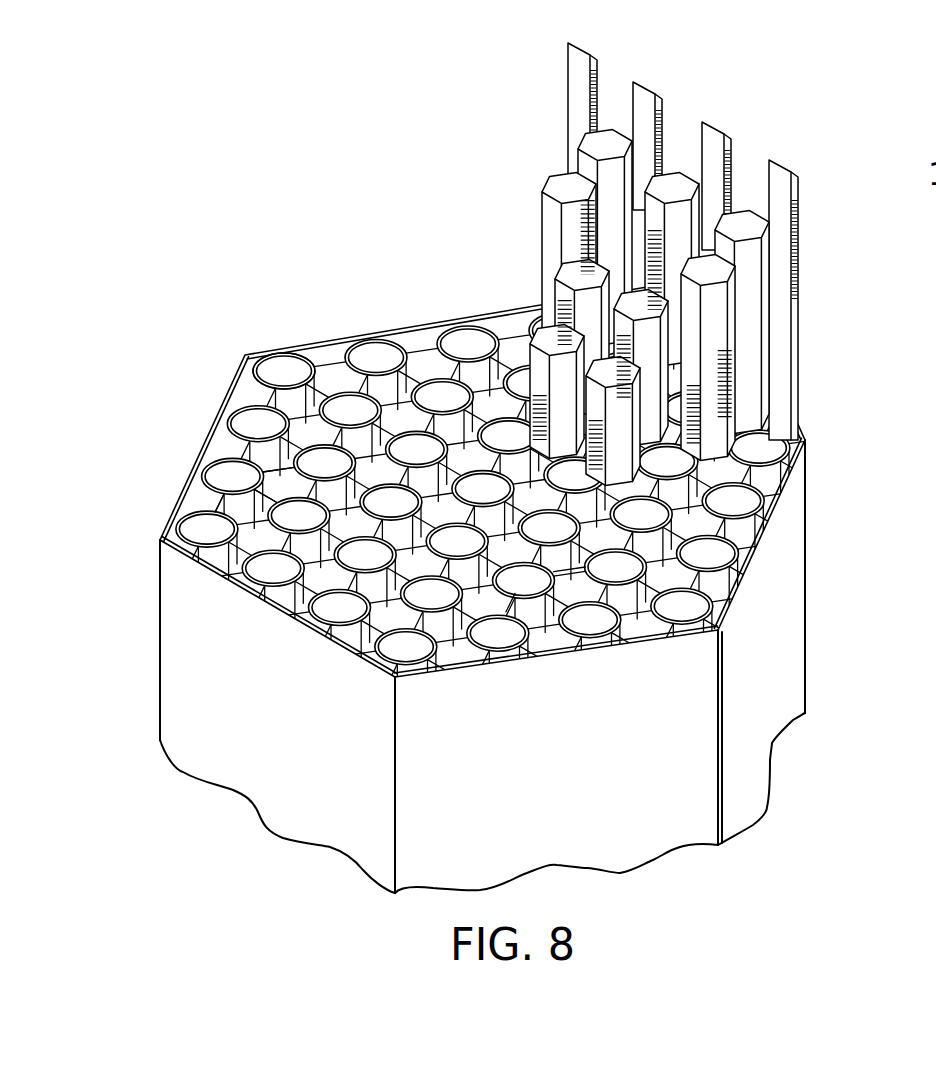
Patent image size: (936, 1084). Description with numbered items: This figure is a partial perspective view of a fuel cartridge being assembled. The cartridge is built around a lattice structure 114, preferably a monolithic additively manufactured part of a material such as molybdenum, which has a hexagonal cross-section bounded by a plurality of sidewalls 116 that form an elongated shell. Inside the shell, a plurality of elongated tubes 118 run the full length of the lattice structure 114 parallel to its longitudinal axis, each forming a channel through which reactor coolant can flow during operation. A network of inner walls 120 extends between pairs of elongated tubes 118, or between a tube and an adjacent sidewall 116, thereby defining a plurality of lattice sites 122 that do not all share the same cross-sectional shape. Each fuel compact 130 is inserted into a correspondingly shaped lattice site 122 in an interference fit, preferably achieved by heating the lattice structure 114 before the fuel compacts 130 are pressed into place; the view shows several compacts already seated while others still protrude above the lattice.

The lattice structure 114 is at (832, 652).
The sidewall 116 is at (257, 755).
The elongated tube 118 is at (288, 370).
The inner wall 120 is at (213, 503).
The lattice site 122 is at (265, 456).
The fuel compact 130 is at (541, 250).